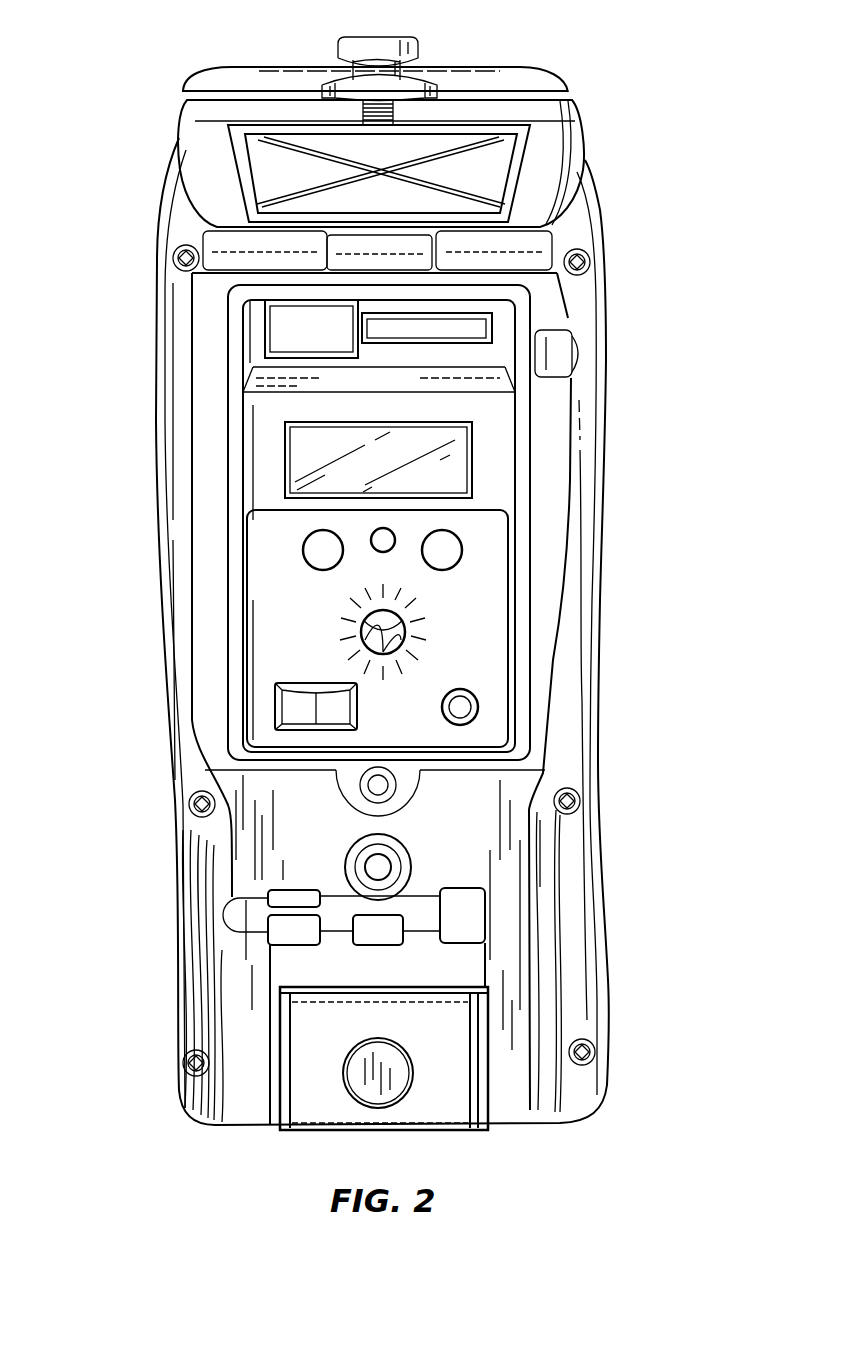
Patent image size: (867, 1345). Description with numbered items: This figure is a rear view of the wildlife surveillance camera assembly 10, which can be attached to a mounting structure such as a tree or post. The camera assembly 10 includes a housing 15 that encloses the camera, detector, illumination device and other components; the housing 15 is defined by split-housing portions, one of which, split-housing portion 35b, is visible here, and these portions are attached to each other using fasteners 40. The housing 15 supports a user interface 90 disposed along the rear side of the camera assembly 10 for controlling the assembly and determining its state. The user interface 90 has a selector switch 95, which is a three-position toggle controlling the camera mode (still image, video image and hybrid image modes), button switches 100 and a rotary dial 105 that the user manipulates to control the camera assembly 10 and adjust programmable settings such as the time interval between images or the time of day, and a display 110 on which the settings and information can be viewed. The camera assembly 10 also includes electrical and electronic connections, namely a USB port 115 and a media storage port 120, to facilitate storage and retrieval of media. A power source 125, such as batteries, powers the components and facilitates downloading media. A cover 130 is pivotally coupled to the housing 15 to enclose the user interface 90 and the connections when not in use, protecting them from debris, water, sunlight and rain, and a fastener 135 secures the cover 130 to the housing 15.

The camera assembly 10 is at (115, 78).
The housing 15 is at (604, 198).
The split-housing portion 35b is at (214, 873).
The fastener 40 is at (188, 1063).
The user interface 90 is at (215, 470).
The selector switch 95 is at (290, 722).
The button switches 100 is at (320, 556).
The rotary dial 105 is at (404, 640).
The display 110 is at (448, 462).
The USB port 115 is at (278, 336).
The media storage port 120 is at (460, 330).
The power source 125 is at (464, 1130).
The cover 130 is at (545, 150).
The fastener 135 is at (418, 49).